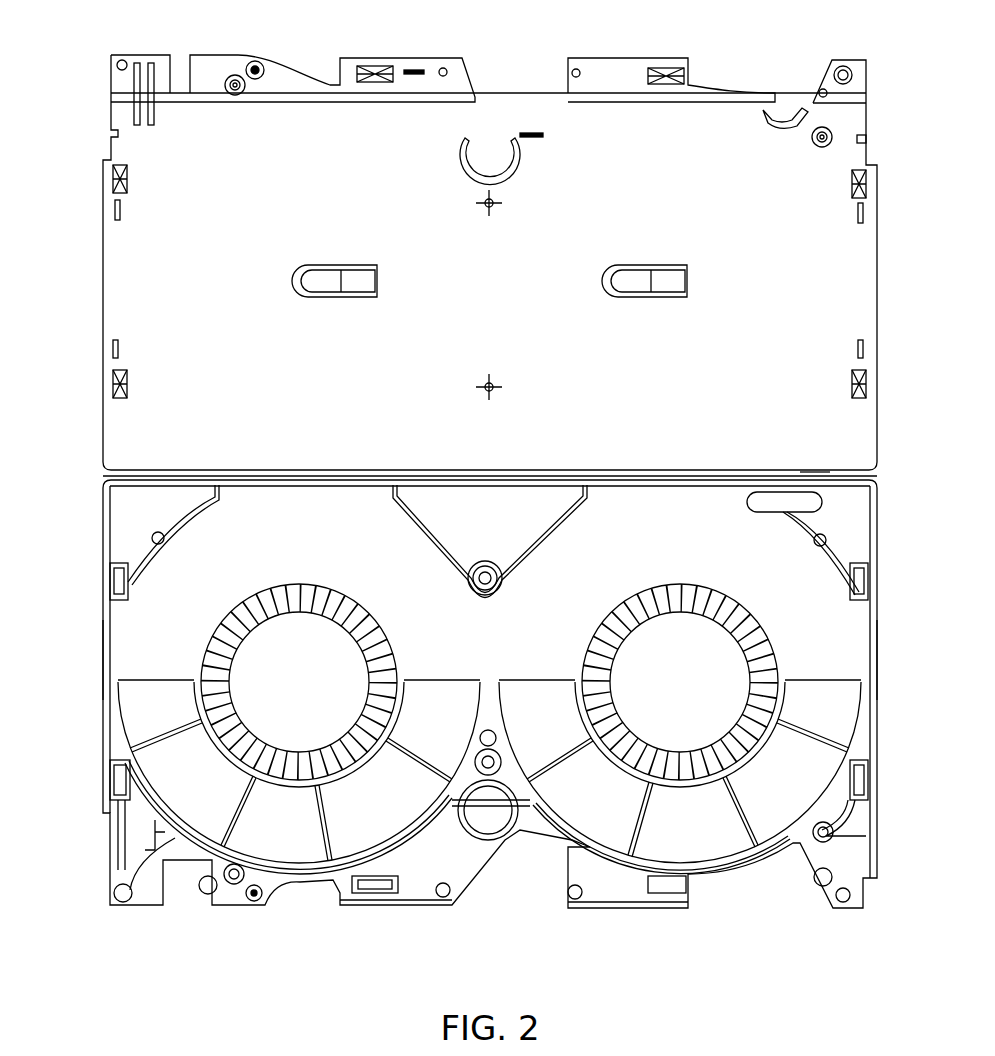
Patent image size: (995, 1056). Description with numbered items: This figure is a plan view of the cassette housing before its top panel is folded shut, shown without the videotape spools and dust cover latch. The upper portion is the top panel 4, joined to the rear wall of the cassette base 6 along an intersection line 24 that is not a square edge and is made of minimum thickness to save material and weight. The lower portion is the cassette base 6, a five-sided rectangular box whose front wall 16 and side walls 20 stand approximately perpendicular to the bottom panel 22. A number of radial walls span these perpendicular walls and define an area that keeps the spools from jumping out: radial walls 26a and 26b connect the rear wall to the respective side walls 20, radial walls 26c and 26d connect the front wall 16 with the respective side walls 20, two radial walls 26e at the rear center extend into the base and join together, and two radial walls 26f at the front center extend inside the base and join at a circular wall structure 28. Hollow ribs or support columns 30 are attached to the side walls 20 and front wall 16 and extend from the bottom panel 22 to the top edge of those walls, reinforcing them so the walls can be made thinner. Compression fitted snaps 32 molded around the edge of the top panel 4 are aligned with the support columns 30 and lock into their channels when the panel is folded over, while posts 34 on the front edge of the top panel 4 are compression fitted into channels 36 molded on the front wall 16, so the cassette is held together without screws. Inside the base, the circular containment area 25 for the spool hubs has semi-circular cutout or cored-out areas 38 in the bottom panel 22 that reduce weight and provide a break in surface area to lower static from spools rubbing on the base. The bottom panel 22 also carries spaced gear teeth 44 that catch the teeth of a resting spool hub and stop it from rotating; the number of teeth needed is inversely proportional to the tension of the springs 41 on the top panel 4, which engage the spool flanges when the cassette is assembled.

The top panel 4 is at (296, 403).
The cassette base 6 is at (90, 545).
The front wall 16 is at (398, 905).
The side walls 20 is at (105, 656).
The bottom panel 22 is at (478, 667).
The intersection line 24 is at (815, 470).
The circular containment area 25 is at (168, 757).
The radial wall 26a is at (180, 535).
The radial wall 26b is at (808, 545).
The radial wall 26c is at (178, 840).
The radial wall 26d is at (812, 870).
The radial walls 26e is at (440, 560).
The radial walls 26f is at (418, 830).
The circular wall structure 28 is at (497, 792).
The support columns 30 is at (866, 582).
The compression fitted snaps 32 is at (375, 70).
The posts 34 is at (445, 68).
The channels 36 is at (445, 898).
The semi-circular cutout area 38 is at (283, 836).
The springs 41 is at (327, 280).
The gear teeth 44 is at (280, 612).